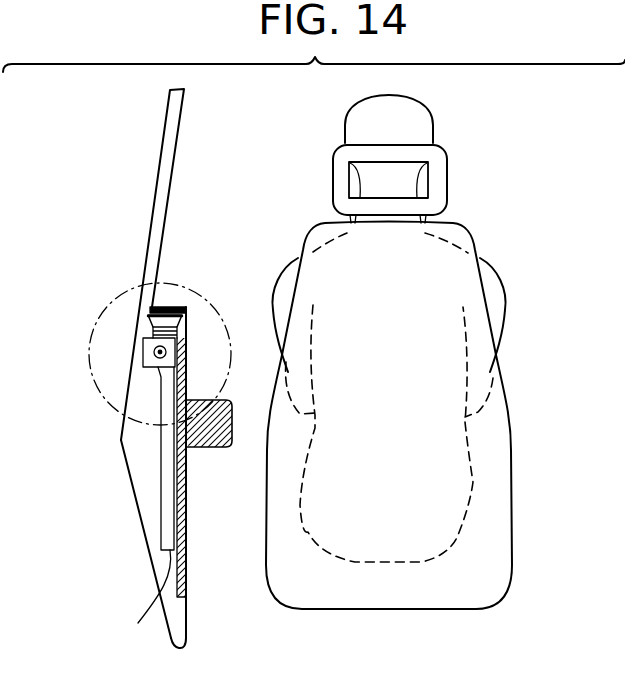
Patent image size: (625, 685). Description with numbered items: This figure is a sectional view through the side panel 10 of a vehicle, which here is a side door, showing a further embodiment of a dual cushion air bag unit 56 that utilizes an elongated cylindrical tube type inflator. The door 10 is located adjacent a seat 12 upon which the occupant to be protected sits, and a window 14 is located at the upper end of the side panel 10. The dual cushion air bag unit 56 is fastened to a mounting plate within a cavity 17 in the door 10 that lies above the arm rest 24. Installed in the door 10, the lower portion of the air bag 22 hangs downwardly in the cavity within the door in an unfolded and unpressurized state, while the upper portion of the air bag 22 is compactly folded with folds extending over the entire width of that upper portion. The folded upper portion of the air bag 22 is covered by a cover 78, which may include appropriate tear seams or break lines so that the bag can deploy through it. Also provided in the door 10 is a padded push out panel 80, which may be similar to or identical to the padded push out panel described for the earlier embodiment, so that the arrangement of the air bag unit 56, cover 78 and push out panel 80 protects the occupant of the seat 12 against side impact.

The side panel 10 is at (140, 537).
The seat 12 is at (511, 481).
The window 14 is at (157, 205).
The cavity 17 is at (140, 470).
The air bag 22 is at (144, 604).
The arm rest 24 is at (202, 437).
The dual cushion air bag unit 56 is at (103, 393).
The cover 78 is at (185, 310).
The padded push out panel 80 is at (188, 568).